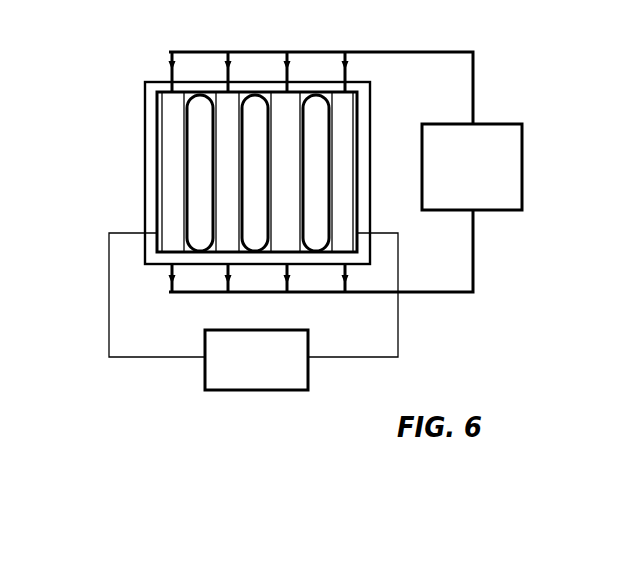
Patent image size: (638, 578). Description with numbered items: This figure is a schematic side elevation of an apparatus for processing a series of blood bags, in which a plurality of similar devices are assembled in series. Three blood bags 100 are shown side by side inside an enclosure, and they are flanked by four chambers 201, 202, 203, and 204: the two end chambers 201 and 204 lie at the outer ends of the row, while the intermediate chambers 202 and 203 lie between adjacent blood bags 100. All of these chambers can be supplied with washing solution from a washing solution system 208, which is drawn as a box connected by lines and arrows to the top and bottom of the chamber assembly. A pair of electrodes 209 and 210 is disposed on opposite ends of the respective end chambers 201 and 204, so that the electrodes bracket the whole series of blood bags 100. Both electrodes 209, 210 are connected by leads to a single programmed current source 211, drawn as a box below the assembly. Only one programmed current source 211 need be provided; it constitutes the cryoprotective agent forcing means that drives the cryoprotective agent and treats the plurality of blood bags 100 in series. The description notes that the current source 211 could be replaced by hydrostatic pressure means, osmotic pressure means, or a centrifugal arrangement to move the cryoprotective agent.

The blood bags 100 is at (308, 120).
The chamber 201 is at (171, 148).
The chamber 202 is at (233, 100).
The chamber 203 is at (285, 100).
The chamber 204 is at (345, 113).
The washing solution system 208 is at (512, 206).
The electrode 209 is at (163, 187).
The electrode 210 is at (352, 216).
The programmed current source 211 is at (250, 385).